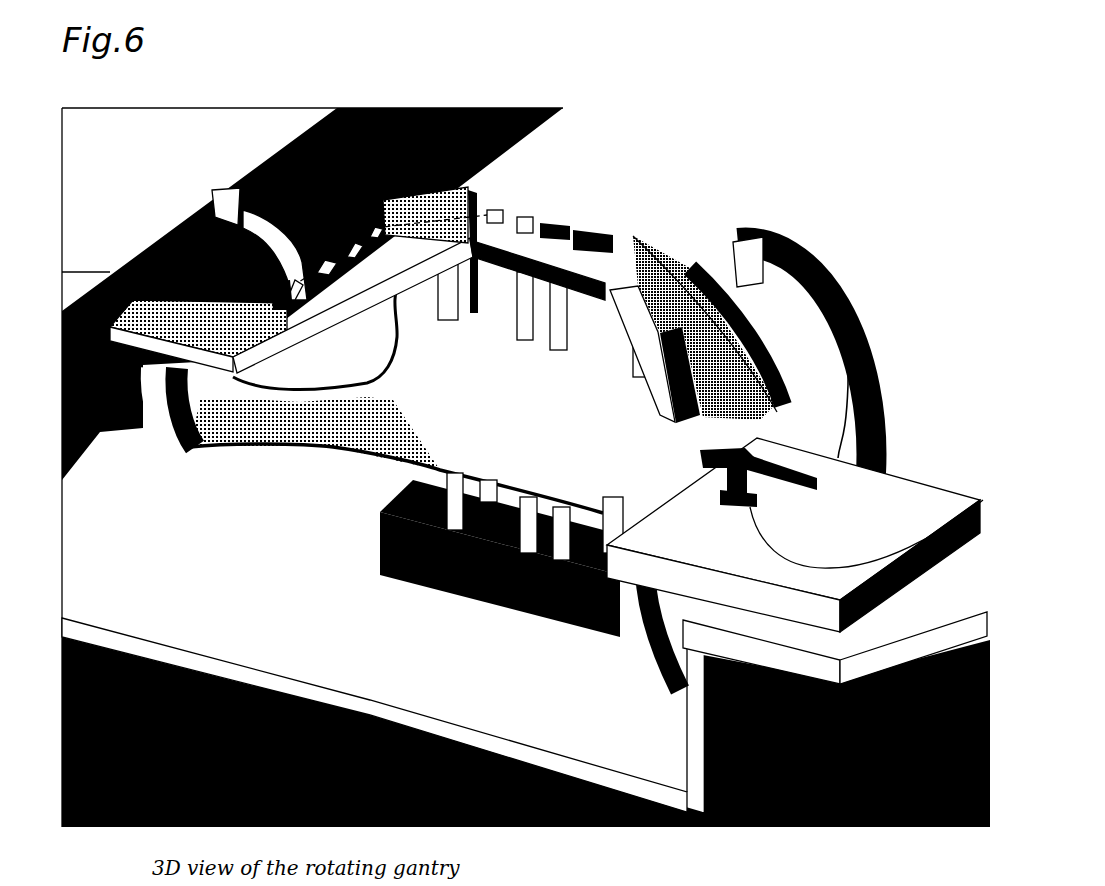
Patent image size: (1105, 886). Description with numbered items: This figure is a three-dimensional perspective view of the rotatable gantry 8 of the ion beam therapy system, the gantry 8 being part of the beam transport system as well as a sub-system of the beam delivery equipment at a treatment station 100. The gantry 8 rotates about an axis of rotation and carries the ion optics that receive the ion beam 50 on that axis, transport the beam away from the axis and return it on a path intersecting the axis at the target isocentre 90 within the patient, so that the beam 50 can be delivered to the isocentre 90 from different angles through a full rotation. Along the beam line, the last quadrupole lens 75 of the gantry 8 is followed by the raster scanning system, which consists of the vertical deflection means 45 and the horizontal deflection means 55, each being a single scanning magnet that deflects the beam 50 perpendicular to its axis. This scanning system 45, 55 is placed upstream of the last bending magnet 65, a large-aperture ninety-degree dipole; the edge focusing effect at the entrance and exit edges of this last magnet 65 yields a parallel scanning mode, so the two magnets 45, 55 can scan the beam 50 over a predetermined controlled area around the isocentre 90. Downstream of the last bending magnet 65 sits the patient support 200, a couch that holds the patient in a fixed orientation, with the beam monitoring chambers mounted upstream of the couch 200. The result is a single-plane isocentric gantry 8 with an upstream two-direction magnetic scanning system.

The gantry 8 is at (684, 143).
The vertical deflection means 45 is at (593, 235).
The ion beam 50 is at (747, 455).
The horizontal deflection means 55 is at (550, 225).
The last bending magnet 65 is at (735, 240).
The last quadrupole lens 75 is at (430, 108).
The target isocentre 90 is at (745, 440).
The treatment station 100 is at (820, 488).
The patient support 200 is at (983, 500).